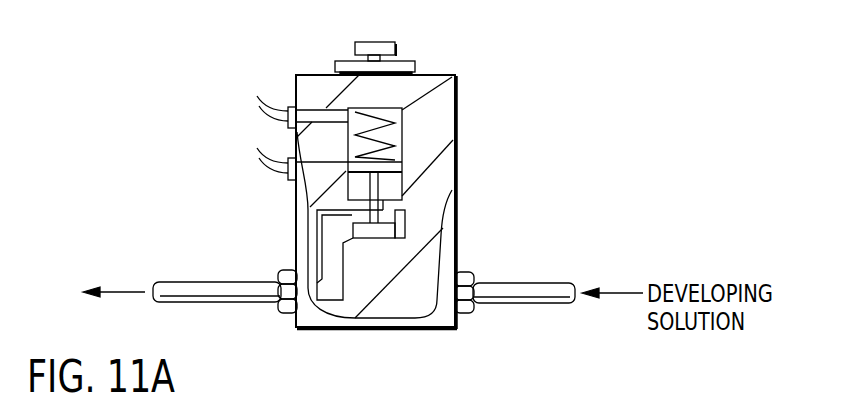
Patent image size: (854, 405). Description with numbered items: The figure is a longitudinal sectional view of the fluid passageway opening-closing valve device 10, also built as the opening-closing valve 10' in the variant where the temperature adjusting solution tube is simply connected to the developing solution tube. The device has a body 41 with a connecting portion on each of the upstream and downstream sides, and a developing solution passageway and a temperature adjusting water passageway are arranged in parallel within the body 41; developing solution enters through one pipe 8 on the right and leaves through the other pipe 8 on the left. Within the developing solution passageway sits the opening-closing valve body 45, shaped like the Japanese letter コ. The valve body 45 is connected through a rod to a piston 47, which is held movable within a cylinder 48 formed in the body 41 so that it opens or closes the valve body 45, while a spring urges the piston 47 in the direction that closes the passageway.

The opening-closing valve device 10 is at (358, 44).
The fluid passageway opening-closing valve 10' is at (418, 115).
The cylinder 48 is at (396, 104).
The body 41 is at (456, 140).
The piston 47 is at (402, 170).
The opening-closing valve body 45 is at (397, 227).
The pipe 8 is at (235, 293).